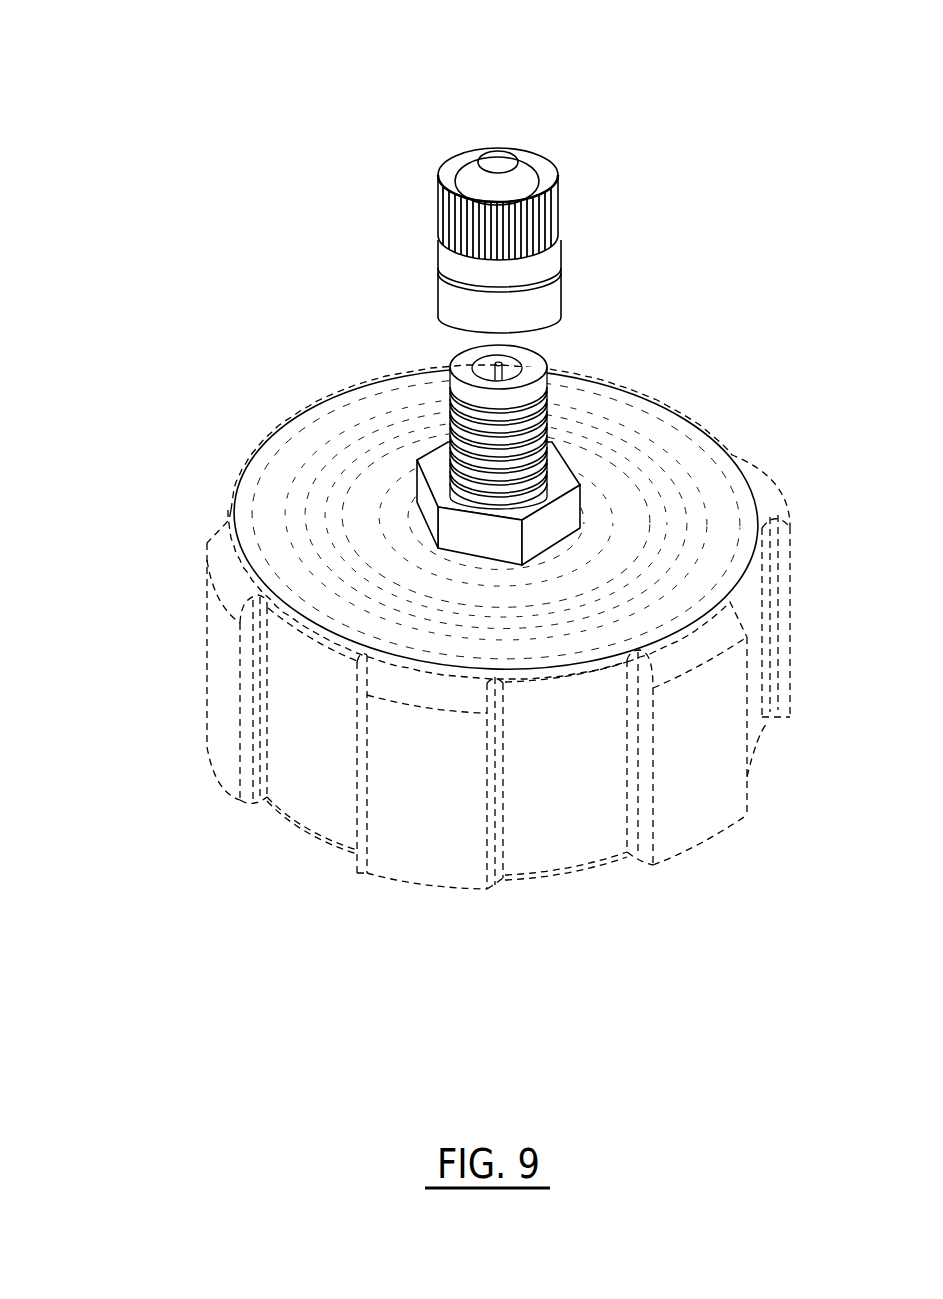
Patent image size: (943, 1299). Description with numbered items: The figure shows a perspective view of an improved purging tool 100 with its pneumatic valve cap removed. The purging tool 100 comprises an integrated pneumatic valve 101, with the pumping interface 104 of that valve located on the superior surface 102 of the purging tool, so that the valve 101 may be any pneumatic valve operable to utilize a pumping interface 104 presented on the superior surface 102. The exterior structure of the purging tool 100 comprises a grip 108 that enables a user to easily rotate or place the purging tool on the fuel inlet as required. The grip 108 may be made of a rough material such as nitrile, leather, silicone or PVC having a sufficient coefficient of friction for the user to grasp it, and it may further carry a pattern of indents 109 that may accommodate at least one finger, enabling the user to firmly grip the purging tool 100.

The purging tool 100 is at (273, 272).
The pneumatic valve 101 is at (555, 440).
The superior surface 102 is at (323, 440).
The pumping interface 104 is at (523, 368).
The grip 108 is at (208, 770).
The pattern of indents 109 is at (542, 825).